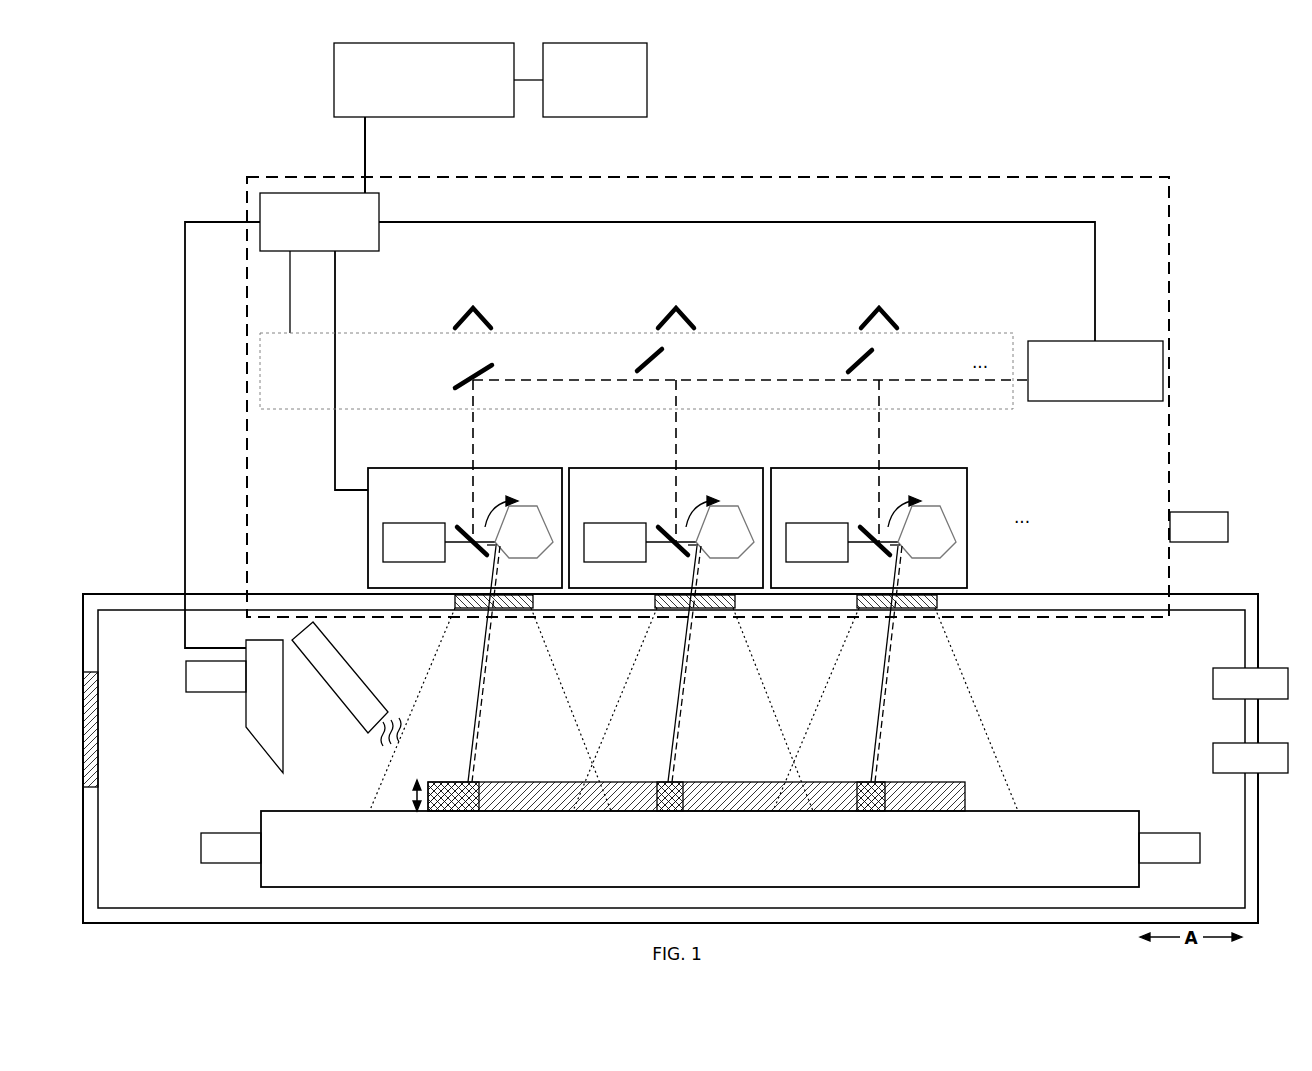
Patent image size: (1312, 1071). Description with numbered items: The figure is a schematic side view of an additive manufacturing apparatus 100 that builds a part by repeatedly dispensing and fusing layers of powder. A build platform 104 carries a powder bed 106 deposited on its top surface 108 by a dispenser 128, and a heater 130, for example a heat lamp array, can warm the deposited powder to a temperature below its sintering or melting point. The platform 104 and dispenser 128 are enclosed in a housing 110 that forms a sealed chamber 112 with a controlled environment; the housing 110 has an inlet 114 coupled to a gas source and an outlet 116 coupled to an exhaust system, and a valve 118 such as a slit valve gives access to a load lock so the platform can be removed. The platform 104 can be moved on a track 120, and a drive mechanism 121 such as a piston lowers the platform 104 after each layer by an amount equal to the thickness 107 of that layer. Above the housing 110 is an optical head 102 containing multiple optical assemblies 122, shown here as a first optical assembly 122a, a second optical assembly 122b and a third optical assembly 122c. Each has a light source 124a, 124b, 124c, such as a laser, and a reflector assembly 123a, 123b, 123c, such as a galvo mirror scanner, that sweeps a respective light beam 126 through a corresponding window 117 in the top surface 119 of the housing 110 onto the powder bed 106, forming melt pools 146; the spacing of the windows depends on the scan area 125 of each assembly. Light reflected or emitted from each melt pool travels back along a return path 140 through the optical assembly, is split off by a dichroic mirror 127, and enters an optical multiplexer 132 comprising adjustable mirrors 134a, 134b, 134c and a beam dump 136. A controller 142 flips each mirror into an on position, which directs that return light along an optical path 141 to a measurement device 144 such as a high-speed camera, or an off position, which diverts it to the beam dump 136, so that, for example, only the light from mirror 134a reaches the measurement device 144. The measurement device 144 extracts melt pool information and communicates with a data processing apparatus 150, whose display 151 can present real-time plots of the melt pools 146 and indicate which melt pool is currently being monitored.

The additive manufacturing apparatus 100 is at (205, 59).
The optical head 102 is at (708, 397).
The build platform 104 is at (670, 849).
The powder bed 106 is at (965, 781).
The thickness 107 is at (400, 795).
The top surface 108 is at (1028, 811).
The housing 110 is at (1200, 594).
The sealed chamber 112 is at (671, 759).
The inlet 114 is at (1250, 683).
The outlet 116 is at (1250, 758).
The windows 117 is at (940, 608).
The valve 118 is at (98, 727).
The top surface 119 is at (1095, 610).
The track 120 is at (1188, 512).
The drive mechanism 121 is at (1160, 833).
The optical assemblies 122 is at (747, 562).
The first optical assembly 122a is at (410, 590).
The second optical assembly 122b is at (648, 590).
The third optical assembly 122c is at (828, 590).
The reflector assembly 123a is at (519, 527).
The reflector assembly 123b is at (720, 527).
The reflector assembly 123c is at (922, 527).
The light source 124a is at (439, 542).
The light source 124b is at (640, 542).
The light source 124c is at (842, 542).
The scan area 125 is at (538, 640).
The light beams 126 is at (478, 693).
The dichroic mirror 127 is at (465, 522).
The dispenser 128 is at (264, 706).
The heater 130 is at (349, 717).
The optical multiplexer 132 is at (636, 371).
The adjustable mirror 134a is at (455, 387).
The adjustable mirror 134b is at (655, 352).
The adjustable mirror 134c is at (858, 356).
The beam dump 136 is at (676, 292).
The return path 140 is at (480, 725).
The optical path 141 is at (537, 380).
The controller 142 is at (319, 222).
The measurement device 144 is at (1095, 371).
The melt pools 146 is at (783, 842).
The data processing apparatus 150 is at (424, 80).
The display 151 is at (595, 80).